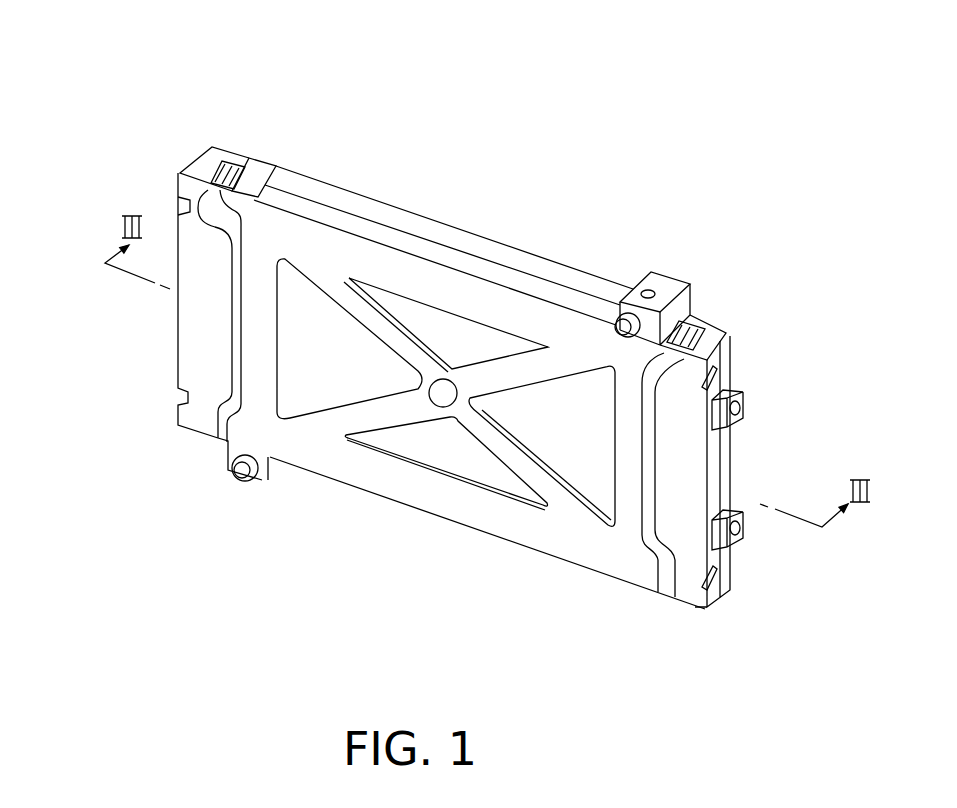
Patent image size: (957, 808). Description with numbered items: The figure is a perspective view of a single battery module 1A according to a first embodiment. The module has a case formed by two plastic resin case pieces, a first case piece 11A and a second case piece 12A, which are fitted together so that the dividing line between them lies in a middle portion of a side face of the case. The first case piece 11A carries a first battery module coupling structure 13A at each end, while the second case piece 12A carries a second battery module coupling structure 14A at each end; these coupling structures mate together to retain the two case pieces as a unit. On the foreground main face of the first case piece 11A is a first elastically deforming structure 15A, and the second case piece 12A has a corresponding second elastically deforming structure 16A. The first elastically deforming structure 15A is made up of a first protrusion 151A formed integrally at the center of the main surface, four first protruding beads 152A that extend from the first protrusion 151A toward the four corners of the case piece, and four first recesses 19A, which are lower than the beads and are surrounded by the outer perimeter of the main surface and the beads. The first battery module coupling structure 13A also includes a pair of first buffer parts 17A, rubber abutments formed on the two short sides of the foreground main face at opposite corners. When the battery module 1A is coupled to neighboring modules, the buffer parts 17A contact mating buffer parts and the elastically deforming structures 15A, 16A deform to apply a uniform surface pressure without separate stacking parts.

The battery module 1A is at (768, 118).
The first case piece 11A is at (178, 367).
The second case piece 12A is at (303, 176).
The first battery module coupling structure 13A is at (186, 430).
The second battery module coupling structure 14A is at (239, 143).
The first elastically deforming structure 15A is at (467, 394).
The first protrusion 151A is at (443, 398).
The first protruding beads 152A is at (352, 420).
The second elastically deforming structure 16A is at (537, 244).
The first buffer parts 17A is at (237, 366).
The first recesses 19A is at (522, 408).